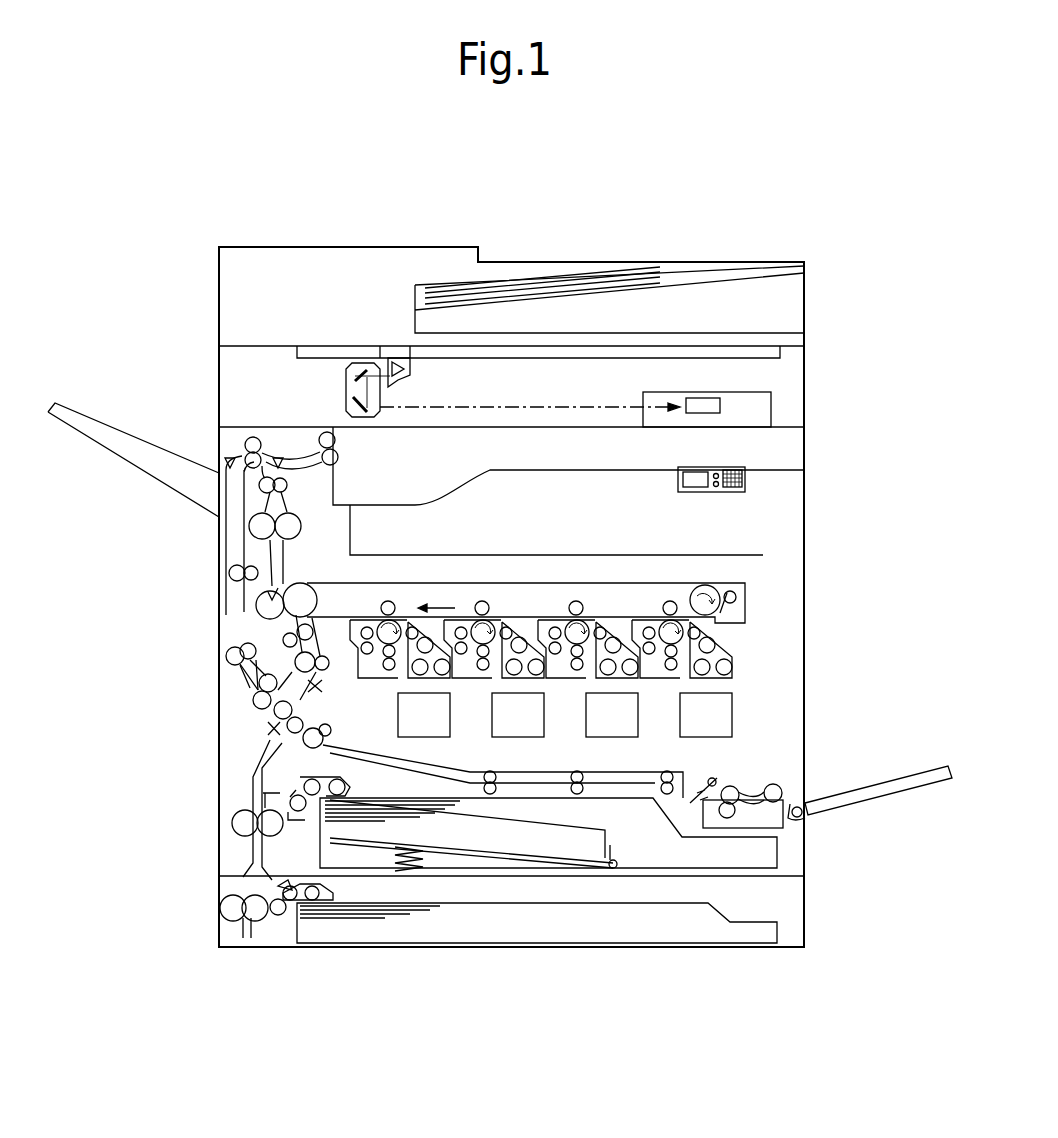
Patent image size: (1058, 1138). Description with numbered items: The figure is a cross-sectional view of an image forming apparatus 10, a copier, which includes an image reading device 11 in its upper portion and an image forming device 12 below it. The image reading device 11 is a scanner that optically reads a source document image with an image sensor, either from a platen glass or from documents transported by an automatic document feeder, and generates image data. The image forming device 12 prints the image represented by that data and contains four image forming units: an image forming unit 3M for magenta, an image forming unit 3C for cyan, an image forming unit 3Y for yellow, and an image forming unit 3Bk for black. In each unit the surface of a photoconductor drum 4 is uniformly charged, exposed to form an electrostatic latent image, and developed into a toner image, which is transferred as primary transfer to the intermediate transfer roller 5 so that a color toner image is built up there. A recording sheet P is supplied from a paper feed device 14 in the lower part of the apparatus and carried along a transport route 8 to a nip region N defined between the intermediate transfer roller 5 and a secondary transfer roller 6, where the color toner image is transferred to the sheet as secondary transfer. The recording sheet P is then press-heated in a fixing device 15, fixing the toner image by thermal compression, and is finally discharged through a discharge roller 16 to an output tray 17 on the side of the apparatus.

The image forming apparatus 10 is at (525, 188).
The image reading device 11 is at (806, 318).
The image forming device 12 is at (762, 663).
The paper feed device 14 is at (768, 962).
The fixing device 15 is at (260, 526).
The discharge roller 16 is at (320, 437).
The output tray 17 is at (413, 497).
The image forming unit for black 3Bk is at (388, 597).
The image forming unit for yellow 3Y is at (473, 597).
The image forming unit for cyan 3C is at (565, 600).
The image forming unit for magenta 3M is at (655, 598).
The photoconductor drum 4 is at (503, 692).
The intermediate transfer roller 5 is at (680, 582).
The secondary transfer roller 6 is at (252, 614).
The transport route 8 is at (268, 737).
The nip region N is at (270, 563).
The recording sheet P is at (598, 822).